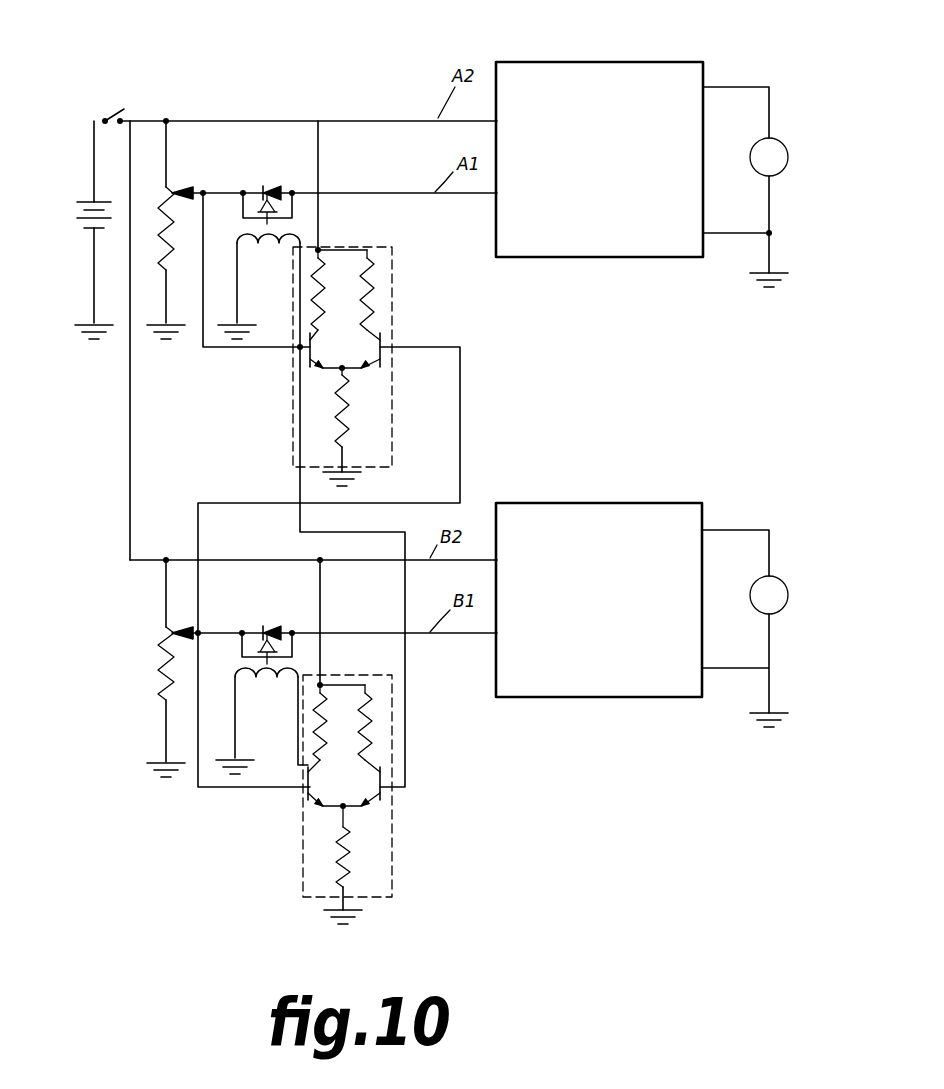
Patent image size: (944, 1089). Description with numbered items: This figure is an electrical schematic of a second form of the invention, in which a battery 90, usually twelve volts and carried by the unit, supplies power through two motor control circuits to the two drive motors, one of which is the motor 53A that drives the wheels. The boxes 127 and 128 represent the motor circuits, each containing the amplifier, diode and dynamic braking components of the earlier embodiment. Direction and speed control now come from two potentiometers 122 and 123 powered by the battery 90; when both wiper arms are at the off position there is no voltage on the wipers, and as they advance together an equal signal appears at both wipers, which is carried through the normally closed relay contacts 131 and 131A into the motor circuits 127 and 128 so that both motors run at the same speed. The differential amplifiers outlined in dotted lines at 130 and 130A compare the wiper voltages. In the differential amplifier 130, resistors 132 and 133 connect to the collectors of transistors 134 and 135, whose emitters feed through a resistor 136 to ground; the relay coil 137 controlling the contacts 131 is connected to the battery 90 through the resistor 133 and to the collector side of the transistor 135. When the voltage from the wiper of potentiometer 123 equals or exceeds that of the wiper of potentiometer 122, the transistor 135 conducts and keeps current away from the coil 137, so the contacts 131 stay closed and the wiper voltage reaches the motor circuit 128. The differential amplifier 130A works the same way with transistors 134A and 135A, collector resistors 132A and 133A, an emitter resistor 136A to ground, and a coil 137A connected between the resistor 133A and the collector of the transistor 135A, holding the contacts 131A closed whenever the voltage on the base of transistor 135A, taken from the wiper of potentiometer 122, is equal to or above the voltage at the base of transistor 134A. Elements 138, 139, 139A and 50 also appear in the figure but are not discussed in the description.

The battery 90 is at (87, 200).
The switch 138 is at (128, 106).
The potentiometer 122 is at (170, 192).
The potentiometer 123 is at (163, 637).
The motor circuit 127 is at (620, 62).
The motor circuit 128 is at (607, 508).
The motor 53A is at (777, 172).
The lamp 50 is at (775, 610).
The diode 139A is at (271, 186).
The diode 139 is at (268, 628).
The normally closed contacts 131A is at (277, 214).
The normally closed contacts 131 is at (275, 655).
The relay coil 137A is at (270, 250).
The relay coil 137 is at (263, 683).
The differential amplifier 130A is at (390, 250).
The differential amplifier 130 is at (393, 890).
The resistor 133A is at (312, 297).
The resistor 133 is at (318, 730).
The resistor 132A is at (368, 317).
The resistor 132 is at (372, 748).
The transistor 135A is at (310, 357).
The transistor 135 is at (305, 798).
The transistor 134A is at (378, 357).
The transistor 134 is at (383, 797).
The resistor 136A is at (347, 442).
The resistor 136 is at (348, 870).